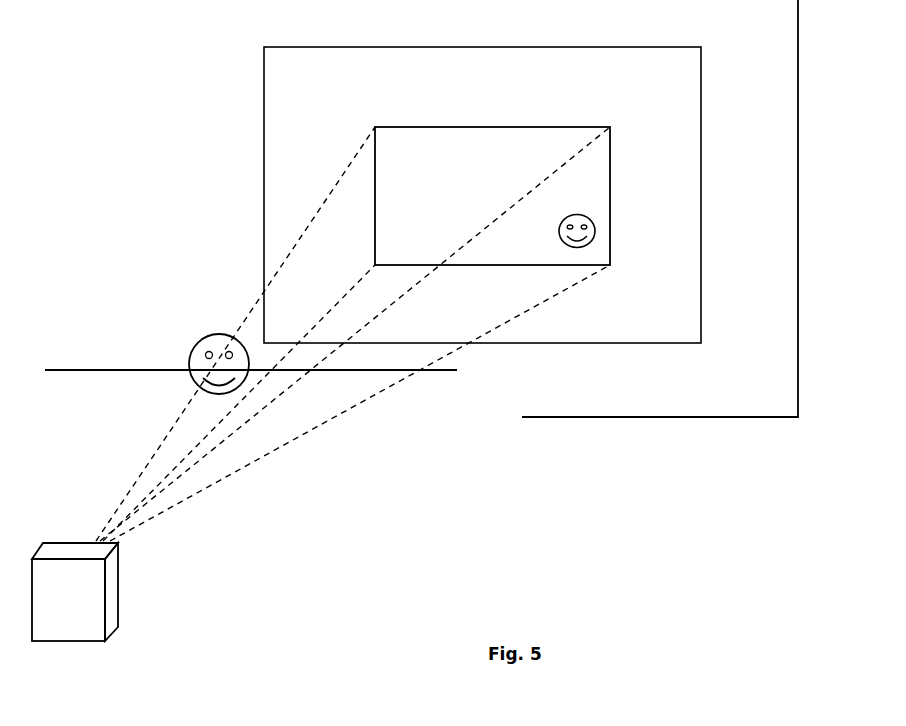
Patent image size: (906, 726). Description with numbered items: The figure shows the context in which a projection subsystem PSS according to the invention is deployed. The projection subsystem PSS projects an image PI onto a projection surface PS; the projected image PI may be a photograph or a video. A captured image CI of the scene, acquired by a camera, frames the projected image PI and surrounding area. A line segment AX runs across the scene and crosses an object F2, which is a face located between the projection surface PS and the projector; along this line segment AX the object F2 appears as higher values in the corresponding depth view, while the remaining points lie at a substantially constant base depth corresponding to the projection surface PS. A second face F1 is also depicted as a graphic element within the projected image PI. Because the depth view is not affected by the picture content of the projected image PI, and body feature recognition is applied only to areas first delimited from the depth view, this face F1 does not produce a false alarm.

The line segment AX is at (98, 370).
The object F2 is at (192, 353).
The projected image PI is at (602, 172).
The second face F1 is at (596, 232).
The captured image CI is at (562, 332).
The projection surface PS is at (582, 406).
The projection subsystem PSS is at (109, 593).